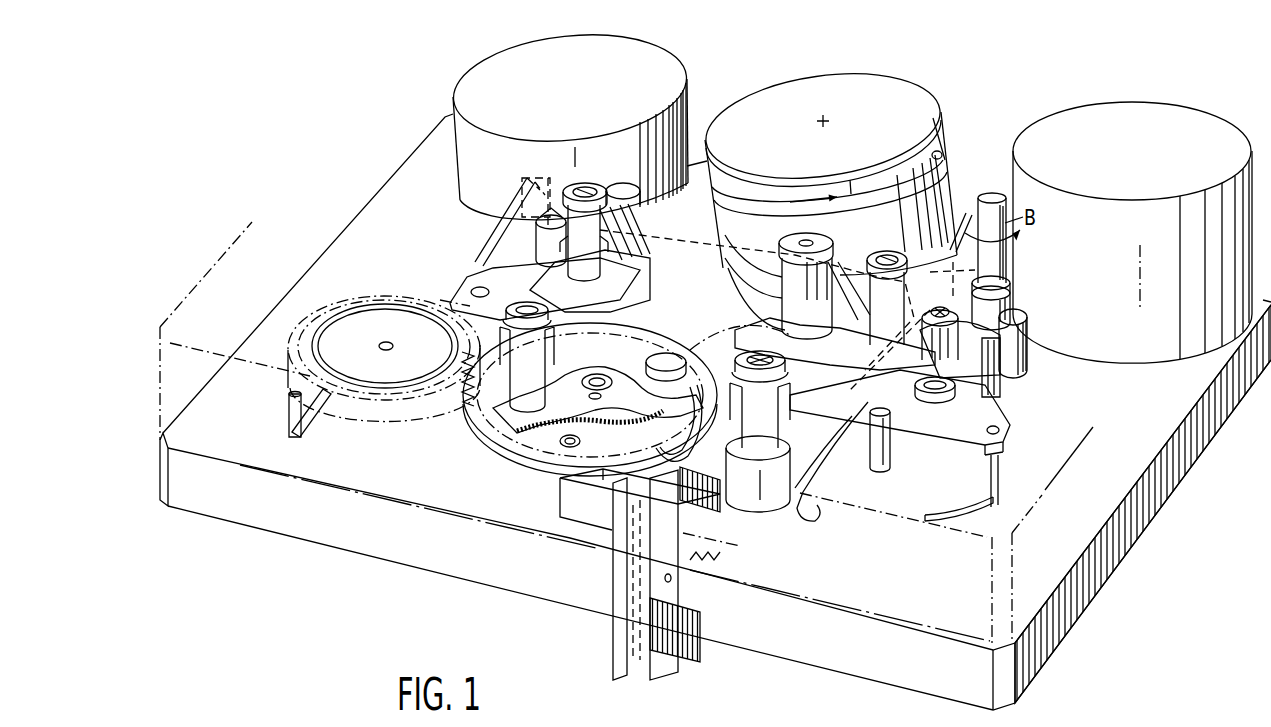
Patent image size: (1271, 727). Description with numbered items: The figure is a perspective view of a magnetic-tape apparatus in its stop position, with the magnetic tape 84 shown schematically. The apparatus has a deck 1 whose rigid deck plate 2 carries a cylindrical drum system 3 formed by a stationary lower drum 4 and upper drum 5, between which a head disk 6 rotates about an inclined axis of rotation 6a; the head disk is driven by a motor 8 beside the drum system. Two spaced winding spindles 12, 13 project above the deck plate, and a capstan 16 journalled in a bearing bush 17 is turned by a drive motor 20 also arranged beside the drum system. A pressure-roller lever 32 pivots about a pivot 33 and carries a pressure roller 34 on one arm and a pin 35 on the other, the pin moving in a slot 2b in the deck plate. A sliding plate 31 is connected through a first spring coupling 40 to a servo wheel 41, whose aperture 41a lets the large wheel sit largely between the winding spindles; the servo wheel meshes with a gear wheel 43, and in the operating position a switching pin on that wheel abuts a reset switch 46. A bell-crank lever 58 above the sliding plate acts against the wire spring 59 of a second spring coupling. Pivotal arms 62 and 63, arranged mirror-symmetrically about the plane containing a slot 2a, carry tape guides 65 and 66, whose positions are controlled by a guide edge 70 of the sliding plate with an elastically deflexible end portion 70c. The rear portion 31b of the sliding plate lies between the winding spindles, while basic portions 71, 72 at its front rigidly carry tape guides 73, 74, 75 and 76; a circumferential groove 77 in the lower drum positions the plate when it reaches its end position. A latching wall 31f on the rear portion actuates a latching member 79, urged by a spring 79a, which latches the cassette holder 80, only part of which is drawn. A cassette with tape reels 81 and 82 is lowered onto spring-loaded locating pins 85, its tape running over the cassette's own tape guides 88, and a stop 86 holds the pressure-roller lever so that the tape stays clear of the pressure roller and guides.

The deck 1 is at (715, 412).
The deck plate 2 is at (868, 643).
The slot 2a is at (757, 320).
The slot 2b is at (960, 512).
The cylindrical drum system 3 is at (832, 156).
The lower drum 4 is at (933, 197).
The upper drum 5 is at (933, 137).
The head disk 6 is at (933, 148).
The axis of rotation 6a is at (823, 118).
The motor 8 is at (543, 57).
The winding spindle 12 is at (483, 387).
The winding spindle 13 is at (778, 430).
The capstan 16 is at (992, 194).
The bearing bush 17 is at (1028, 327).
The drive motor 20 is at (1200, 130).
The sliding plate 31 is at (647, 506).
The rear portion of sliding plate 31b is at (607, 482).
The latching wall 31f is at (712, 516).
The pressure-roller lever 32 is at (921, 412).
The pivot 33 is at (950, 392).
The pressure roller 34 is at (786, 279).
The pin 35 is at (998, 487).
The first spring coupling 40 is at (607, 380).
The servo wheel 41 is at (590, 390).
The aperture 41a is at (630, 350).
The gear wheel 43 is at (390, 420).
The reset switch 46 is at (293, 440).
The bell-crank lever 58 is at (585, 425).
The wire spring 59 is at (685, 450).
The pivotal arm 62 is at (502, 250).
The pivotal arm 63 is at (1003, 370).
The tape guide 65 is at (622, 186).
The tape guide 66 is at (880, 252).
The guide edge 70 is at (831, 469).
The end portion 70c is at (822, 518).
The basic portion 71 is at (518, 267).
The basic portion 72 is at (855, 337).
The tape guide 73 is at (580, 220).
The tape guide 74 is at (638, 228).
The tape guide 75 is at (815, 243).
The tape guide 76 is at (877, 317).
The groove 77 is at (950, 236).
The latching member 79 is at (672, 575).
The spring 79a is at (700, 573).
The cassette holder 80 is at (493, 523).
The tape reel 81 is at (443, 298).
The tape reel 82 is at (877, 387).
The magnetic tape 84 is at (697, 222).
The locating pin 85 is at (553, 215).
The stop 86 is at (877, 470).
The tape guides 88 is at (530, 180).